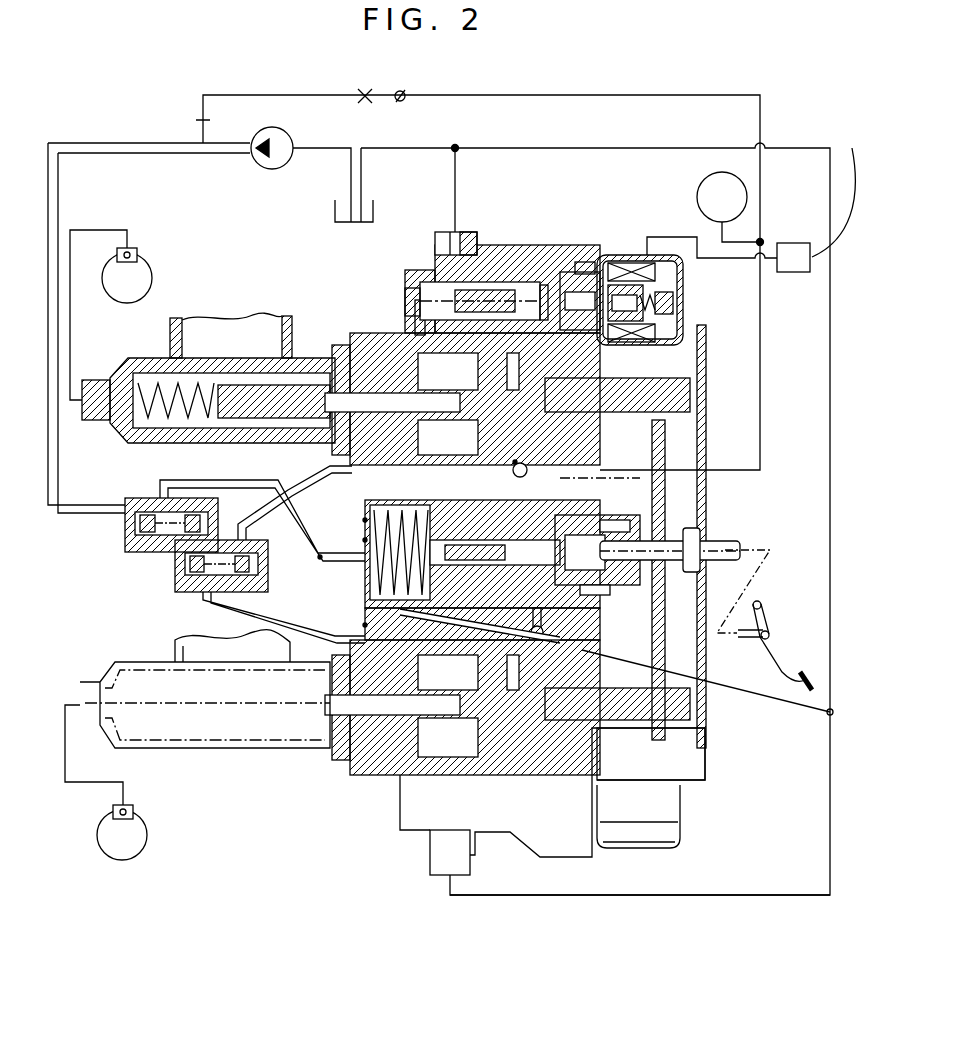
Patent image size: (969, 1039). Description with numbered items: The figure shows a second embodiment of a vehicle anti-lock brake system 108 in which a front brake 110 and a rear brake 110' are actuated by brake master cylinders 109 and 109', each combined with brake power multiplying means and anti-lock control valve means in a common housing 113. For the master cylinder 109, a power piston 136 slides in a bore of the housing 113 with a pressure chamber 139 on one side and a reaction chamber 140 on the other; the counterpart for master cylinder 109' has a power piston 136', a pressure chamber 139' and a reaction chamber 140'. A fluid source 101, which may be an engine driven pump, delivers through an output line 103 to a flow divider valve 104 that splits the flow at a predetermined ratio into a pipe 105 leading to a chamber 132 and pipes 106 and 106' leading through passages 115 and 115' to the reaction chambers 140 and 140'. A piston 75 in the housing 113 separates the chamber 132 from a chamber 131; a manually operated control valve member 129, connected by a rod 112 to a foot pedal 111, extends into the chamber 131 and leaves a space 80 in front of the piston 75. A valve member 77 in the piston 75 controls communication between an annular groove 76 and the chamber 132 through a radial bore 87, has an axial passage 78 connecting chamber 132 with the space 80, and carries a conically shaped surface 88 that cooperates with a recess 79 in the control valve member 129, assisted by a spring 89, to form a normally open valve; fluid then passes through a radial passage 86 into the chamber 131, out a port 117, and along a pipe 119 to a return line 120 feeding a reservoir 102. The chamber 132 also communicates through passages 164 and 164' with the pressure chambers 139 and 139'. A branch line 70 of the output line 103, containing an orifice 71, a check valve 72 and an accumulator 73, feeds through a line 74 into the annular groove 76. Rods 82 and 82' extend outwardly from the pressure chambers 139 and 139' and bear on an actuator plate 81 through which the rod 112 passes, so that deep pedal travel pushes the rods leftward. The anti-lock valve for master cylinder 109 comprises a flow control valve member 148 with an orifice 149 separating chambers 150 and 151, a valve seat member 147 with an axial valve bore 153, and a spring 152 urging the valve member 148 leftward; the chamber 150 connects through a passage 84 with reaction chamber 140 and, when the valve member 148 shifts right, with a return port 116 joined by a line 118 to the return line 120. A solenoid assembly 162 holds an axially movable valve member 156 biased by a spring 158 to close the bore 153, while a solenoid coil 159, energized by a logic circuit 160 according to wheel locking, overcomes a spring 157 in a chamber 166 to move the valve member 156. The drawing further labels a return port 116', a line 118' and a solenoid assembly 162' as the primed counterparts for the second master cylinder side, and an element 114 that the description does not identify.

The branch line 70 is at (290, 95).
The orifice 71 is at (364, 89).
The check valve 72 is at (404, 92).
The accumulator 73 is at (748, 190).
The line 74 is at (761, 330).
The piston 75 is at (590, 478).
The annular groove 76 is at (527, 468).
The valve member 77 is at (365, 575).
The axial passage 78 is at (430, 552).
The recess 79 is at (585, 592).
The space 80 is at (585, 515).
The actuator plate 81 is at (665, 445).
The axially movable rod 82 is at (717, 536).
The axially movable rod 82' is at (651, 754).
The passage 84 is at (420, 333).
The radial passage 86 is at (690, 530).
The radial bore 87 is at (400, 552).
The conically shaped surface 88 is at (585, 552).
The spring 89 is at (468, 612).
The fluid source 101 is at (290, 148).
The reservoir 102 is at (335, 205).
The output line 103 is at (154, 144).
The flow divider valve 104 is at (125, 550).
The pipe 105 is at (230, 488).
The pipe 106 is at (295, 501).
The pipe 106' is at (259, 617).
The vehicle anti-lock brake system 108 is at (350, 338).
The brake master cylinder 109 is at (208, 378).
The brake master cylinder 109' is at (205, 707).
The front brake 110 is at (126, 313).
The rear brake 110' is at (129, 782).
The foot pedal 111 is at (780, 660).
The rod 112 is at (720, 555).
The housing 113 is at (365, 333).
The port 114 is at (318, 556).
The passage 115 is at (337, 508).
The passage 115' is at (335, 612).
The return port 116 is at (475, 229).
The foot 116' is at (423, 865).
The port 117 is at (578, 690).
The line 118 is at (480, 189).
The line 118' is at (640, 912).
The pipe 119 is at (770, 712).
The return line 120 is at (548, 148).
The manually operated control valve member 129 is at (600, 530).
The chamber 131 is at (545, 632).
The chamber 132 is at (365, 540).
The power piston 136 is at (448, 437).
The power piston 136' is at (515, 748).
The pressure chamber 139 is at (549, 371).
The pressure chamber 139' is at (542, 672).
The reaction chamber 140 is at (448, 371).
The reaction chamber 140' is at (449, 737).
The valve seat member 147 is at (525, 252).
The flow control valve member 148 is at (430, 275).
The orifice 149 is at (410, 303).
The chamber 150 is at (425, 300).
The chamber 151 is at (490, 282).
The spring 152 is at (450, 245).
The axial valve bore 153 is at (548, 284).
The axially movable valve member 156 is at (598, 275).
The spring 157 is at (578, 262).
The spring 158 is at (675, 305).
The solenoid coil 159 is at (620, 262).
The logic circuit 160 is at (787, 243).
The solenoid assembly 162 is at (664, 300).
The cover 162' is at (664, 835).
The passage 164 is at (537, 447).
The passage 164' is at (448, 672).
The chamber 166 is at (585, 372).